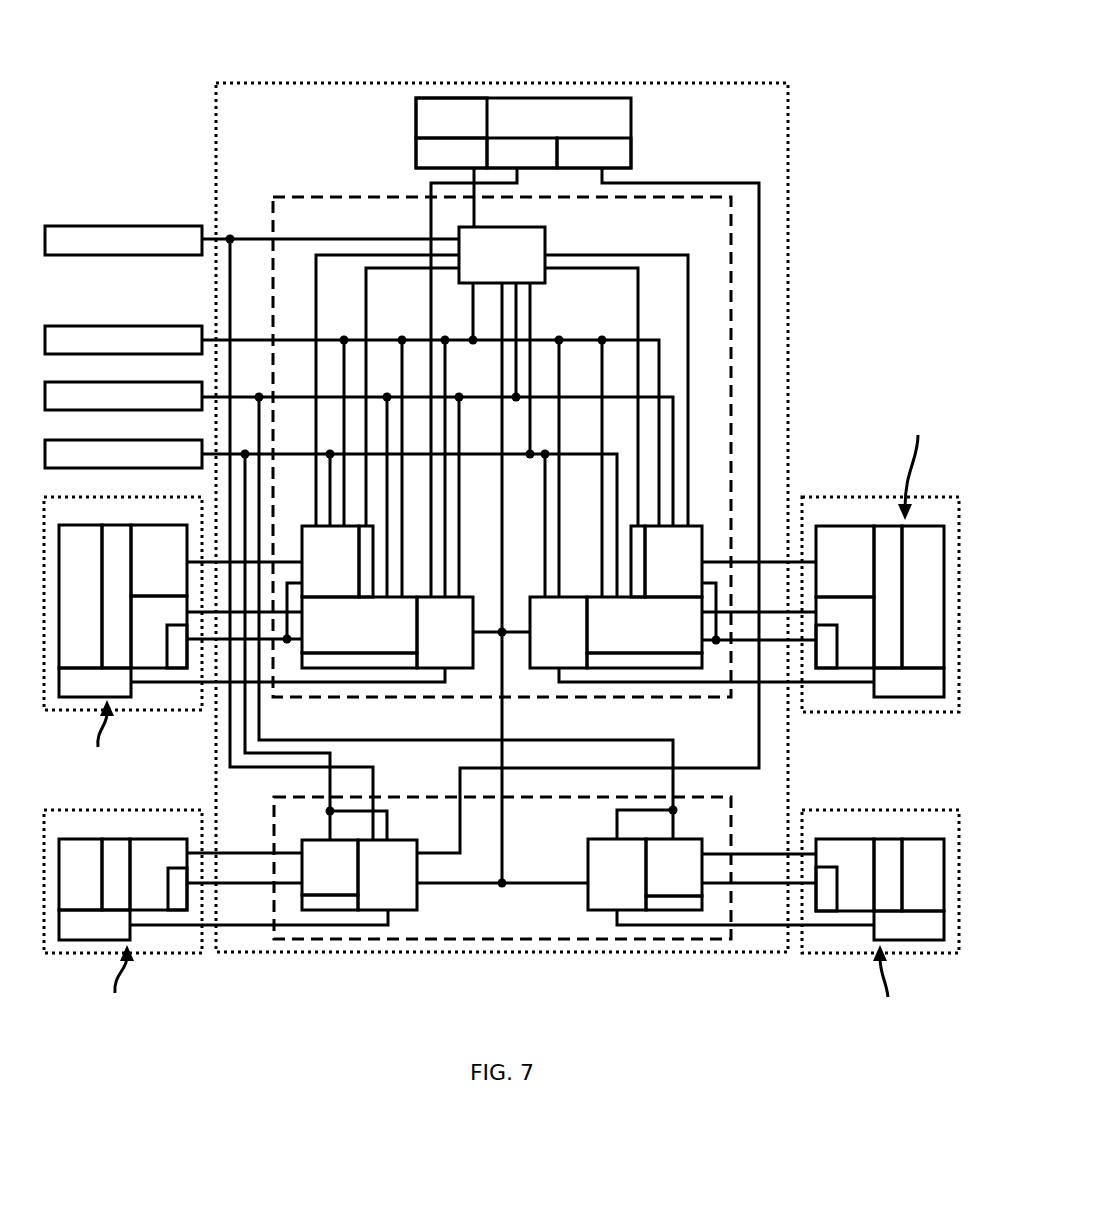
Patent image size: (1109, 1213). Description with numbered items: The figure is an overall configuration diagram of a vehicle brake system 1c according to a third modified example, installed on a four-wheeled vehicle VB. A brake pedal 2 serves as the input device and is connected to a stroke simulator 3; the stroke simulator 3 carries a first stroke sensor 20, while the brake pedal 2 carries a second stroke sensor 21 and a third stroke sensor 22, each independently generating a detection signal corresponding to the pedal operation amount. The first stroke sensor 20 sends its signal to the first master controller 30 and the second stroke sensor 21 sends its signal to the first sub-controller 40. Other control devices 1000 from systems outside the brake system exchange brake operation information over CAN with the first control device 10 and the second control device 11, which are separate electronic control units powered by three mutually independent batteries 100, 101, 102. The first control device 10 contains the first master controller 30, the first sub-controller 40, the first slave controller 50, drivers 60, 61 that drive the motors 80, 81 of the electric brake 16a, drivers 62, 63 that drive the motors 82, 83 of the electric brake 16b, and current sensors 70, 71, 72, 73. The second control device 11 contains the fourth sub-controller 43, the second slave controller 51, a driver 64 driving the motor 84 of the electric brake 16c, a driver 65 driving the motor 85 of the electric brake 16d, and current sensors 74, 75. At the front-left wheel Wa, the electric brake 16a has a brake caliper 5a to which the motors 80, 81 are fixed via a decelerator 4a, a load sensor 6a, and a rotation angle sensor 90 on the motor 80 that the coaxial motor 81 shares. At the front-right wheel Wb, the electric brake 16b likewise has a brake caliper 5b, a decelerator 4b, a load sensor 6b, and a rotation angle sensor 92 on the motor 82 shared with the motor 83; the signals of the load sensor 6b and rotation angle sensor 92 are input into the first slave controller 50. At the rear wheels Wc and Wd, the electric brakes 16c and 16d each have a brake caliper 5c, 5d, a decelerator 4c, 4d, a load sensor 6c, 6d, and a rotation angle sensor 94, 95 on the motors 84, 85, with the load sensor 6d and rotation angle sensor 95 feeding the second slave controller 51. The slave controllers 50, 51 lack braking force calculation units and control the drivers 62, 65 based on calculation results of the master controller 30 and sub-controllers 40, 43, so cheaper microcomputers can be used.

The vehicle brake system 1c is at (813, 45).
The vehicle VB is at (788, 150).
The brake pedal 2 is at (563, 108).
The stroke simulator 3 is at (448, 108).
The first stroke sensor 20 is at (422, 155).
The second stroke sensor 21 is at (518, 152).
The third stroke sensor 22 is at (623, 155).
The first master controller 30 is at (545, 240).
The first control device 10 is at (731, 325).
The second control device 11 is at (503, 953).
The other control devices 1000 is at (127, 225).
The battery 100 is at (150, 325).
The battery 101 is at (150, 381).
The battery 102 is at (150, 439).
The wheel Wa is at (120, 496).
The wheel Wb is at (857, 493).
The wheel Wc is at (132, 808).
The wheel Wd is at (859, 808).
The brake caliper 5a is at (86, 525).
The decelerator 4a is at (122, 525).
The motor 81 is at (158, 525).
The motor 80 is at (152, 658).
The rotation angle sensor 90 is at (175, 658).
The load sensor 6a is at (80, 687).
The electric brake 16a is at (99, 737).
The motor 83 is at (843, 535).
The motor 82 is at (852, 658).
The rotation angle sensor 92 is at (825, 658).
The decelerator 4b is at (884, 535).
The brake caliper 5b is at (925, 535).
The load sensor 6b is at (907, 685).
The electric brake 16b is at (918, 462).
The brake caliper 5c is at (80, 847).
The decelerator 4c is at (116, 847).
The motor 84 is at (158, 847).
The rotation angle sensor 94 is at (175, 903).
The load sensor 6c is at (93, 928).
The electric brake 16c is at (117, 986).
The motor 85 is at (843, 847).
The rotation angle sensor 95 is at (828, 902).
The decelerator 4d is at (886, 847).
The brake caliper 5d is at (920, 847).
The load sensor 6d is at (907, 928).
The electric brake 16d is at (890, 985).
The driver 61 is at (309, 533).
The current sensor 71 is at (382, 540).
The driver 60 is at (369, 640).
The current sensor 70 is at (338, 662).
The first sub-controller 40 is at (465, 605).
The first slave controller 50 is at (538, 605).
The driver 62 is at (624, 642).
The current sensor 72 is at (658, 662).
The current sensor 73 is at (612, 540).
The driver 63 is at (695, 538).
The driver 64 is at (318, 910).
The current sensor 74 is at (338, 913).
The fourth sub-controller 43 is at (400, 895).
The second slave controller 51 is at (605, 888).
The driver 65 is at (685, 883).
The current sensor 75 is at (668, 902).